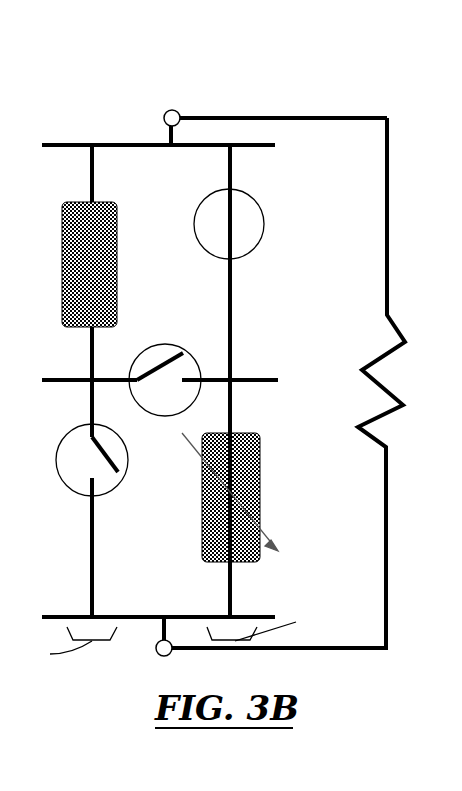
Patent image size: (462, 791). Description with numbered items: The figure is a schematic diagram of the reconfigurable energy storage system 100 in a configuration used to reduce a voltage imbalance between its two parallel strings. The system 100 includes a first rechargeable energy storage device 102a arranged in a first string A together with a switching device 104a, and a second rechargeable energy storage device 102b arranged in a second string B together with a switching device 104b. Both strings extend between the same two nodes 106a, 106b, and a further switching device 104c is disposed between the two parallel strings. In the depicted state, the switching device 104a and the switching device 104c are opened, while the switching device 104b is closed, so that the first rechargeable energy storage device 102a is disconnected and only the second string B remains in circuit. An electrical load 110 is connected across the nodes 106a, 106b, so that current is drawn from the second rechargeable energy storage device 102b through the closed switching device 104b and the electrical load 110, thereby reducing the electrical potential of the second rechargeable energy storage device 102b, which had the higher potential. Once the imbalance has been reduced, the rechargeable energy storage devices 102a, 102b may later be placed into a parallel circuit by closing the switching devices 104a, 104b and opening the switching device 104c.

The reconfigurable energy storage system 100 is at (278, 105).
The first rechargeable energy storage device 102a is at (89, 264).
The second rechargeable energy storage device 102b is at (230, 497).
The switching device 104a is at (102, 480).
The switching device 104b is at (251, 200).
The switching device 104c is at (176, 350).
The node 106a is at (168, 110).
The node 106b is at (160, 655).
The electrical load 110 is at (364, 350).